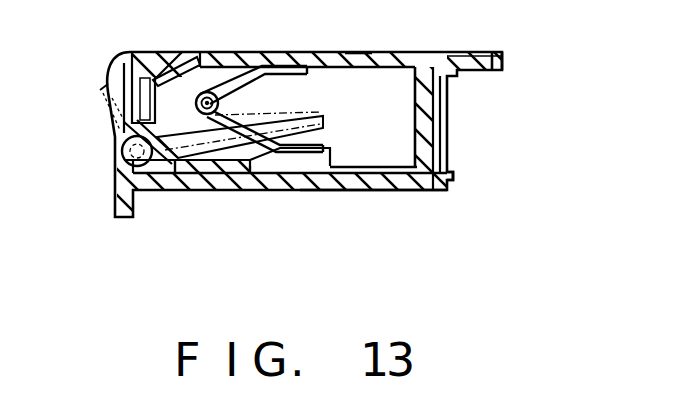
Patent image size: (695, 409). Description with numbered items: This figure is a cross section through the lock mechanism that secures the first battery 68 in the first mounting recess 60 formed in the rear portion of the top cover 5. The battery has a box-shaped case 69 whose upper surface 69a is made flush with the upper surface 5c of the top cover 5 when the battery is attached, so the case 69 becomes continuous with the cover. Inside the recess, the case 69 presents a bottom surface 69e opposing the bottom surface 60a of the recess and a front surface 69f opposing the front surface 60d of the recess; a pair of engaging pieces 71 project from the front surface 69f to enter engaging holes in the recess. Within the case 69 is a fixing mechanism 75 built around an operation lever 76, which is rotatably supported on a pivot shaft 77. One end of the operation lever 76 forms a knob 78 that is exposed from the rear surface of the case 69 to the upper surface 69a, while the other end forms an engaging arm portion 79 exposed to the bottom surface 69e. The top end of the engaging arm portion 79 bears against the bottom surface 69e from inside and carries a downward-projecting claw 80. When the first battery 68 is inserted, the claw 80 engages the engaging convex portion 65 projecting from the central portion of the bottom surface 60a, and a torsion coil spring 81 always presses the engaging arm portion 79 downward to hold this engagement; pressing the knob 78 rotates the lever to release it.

The first mounting recess 60 is at (177, 191).
The bottom surface 60a is at (392, 165).
The front surface 60d is at (440, 106).
The engaging convex portion 65 is at (225, 175).
The first battery 68 is at (352, 52).
The case 69 is at (402, 62).
The upper surface 69a is at (303, 55).
The bottom surface 69e is at (360, 190).
The front surface 69f is at (433, 146).
The engaging pieces 71 is at (455, 176).
The fixing mechanism 75 is at (189, 78).
The operation lever 76 is at (100, 91).
The pivot shaft 77 is at (121, 151).
The knob 78 is at (149, 62).
The engaging arm portion 79 is at (316, 158).
The claw 80 is at (265, 178).
The torsion coil spring 81 is at (236, 78).
The top cover 5 is at (465, 55).
The upper surface 5c is at (493, 53).